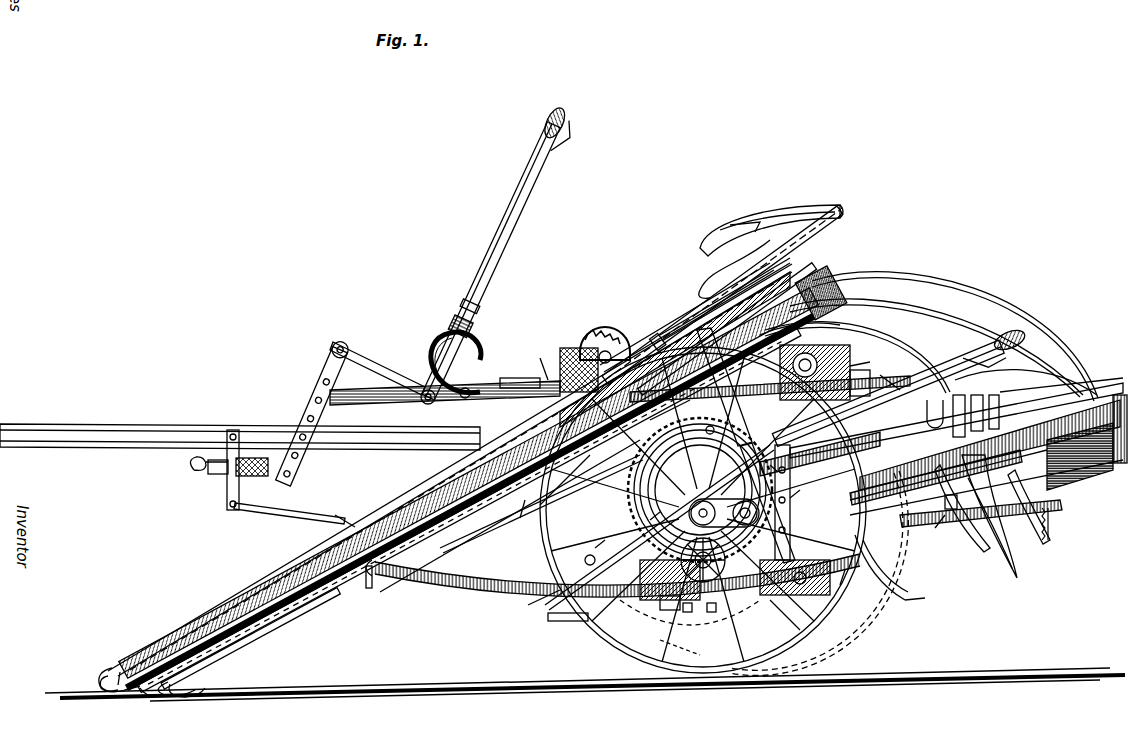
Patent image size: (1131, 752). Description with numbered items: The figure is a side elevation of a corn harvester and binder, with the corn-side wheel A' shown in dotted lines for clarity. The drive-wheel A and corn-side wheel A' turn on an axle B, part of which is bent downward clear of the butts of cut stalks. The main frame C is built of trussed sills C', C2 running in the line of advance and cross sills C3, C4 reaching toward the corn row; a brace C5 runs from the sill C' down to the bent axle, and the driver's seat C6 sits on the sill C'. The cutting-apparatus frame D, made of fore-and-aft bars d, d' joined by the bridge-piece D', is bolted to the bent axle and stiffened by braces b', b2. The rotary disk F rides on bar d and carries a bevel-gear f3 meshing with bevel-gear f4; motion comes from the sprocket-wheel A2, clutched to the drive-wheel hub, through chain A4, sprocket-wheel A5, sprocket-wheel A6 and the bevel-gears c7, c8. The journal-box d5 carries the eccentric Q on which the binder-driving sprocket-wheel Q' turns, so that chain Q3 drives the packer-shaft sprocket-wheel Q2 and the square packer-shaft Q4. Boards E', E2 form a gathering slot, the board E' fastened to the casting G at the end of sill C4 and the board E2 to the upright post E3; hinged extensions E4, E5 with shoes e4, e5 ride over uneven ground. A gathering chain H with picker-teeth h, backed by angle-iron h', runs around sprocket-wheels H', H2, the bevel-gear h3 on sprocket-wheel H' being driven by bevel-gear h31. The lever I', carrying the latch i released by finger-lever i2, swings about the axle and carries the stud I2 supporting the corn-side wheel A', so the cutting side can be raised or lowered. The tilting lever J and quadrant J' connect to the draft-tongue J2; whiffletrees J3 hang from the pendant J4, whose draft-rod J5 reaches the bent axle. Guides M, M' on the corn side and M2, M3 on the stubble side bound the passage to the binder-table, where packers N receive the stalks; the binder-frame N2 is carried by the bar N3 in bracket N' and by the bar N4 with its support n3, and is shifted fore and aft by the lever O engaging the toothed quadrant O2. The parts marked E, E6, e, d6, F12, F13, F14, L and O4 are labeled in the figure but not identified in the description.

The drive-wheel A is at (703, 510).
The corn-side wheel A' is at (821, 573).
The sprocket-wheel A2 is at (510, 516).
The chain A4 is at (670, 414).
The sprocket-wheel A5 is at (809, 349).
The sprocket-wheel A6 is at (770, 585).
The axle B is at (742, 600).
The brace b' is at (580, 553).
The brace b2 is at (801, 588).
The main frame C is at (653, 452).
The trussed sill C' is at (520, 371).
The trussed sill C2 is at (690, 525).
The front overreaching sill C3 is at (575, 352).
The rear overreaching sill C4 is at (815, 370).
The brace C5 is at (565, 483).
The driver's seat C6 is at (810, 228).
The bevel-gear c7 is at (716, 608).
The bevel-gear c8 is at (692, 608).
The cutting-apparatus frame D is at (670, 615).
The bridge-piece D' is at (667, 593).
The bar d is at (543, 607).
The bar d' is at (373, 585).
The journal-box d5 is at (848, 590).
The pin d6 is at (715, 420).
The main frame beam E is at (477, 476).
The board E' is at (541, 504).
The board E2 is at (350, 580).
The upright post E3 is at (820, 460).
The hinged extension E4 is at (165, 640).
The hinged extension E5 is at (262, 624).
The frame lug E6 is at (345, 523).
The pin e is at (797, 499).
The shoe e4 is at (104, 684).
The shoe e5 is at (190, 680).
The rotary disk F is at (659, 533).
The rod end F12 is at (566, 627).
The link F13 is at (785, 617).
The link F14 is at (680, 644).
The bevel-gear f3 is at (596, 544).
The bevel-gear f4 is at (652, 523).
The casting G is at (746, 445).
The gathering chain H is at (613, 571).
The sprocket-wheel H' is at (856, 356).
The sprocket-wheel H2 is at (230, 640).
The picker-teeth h is at (800, 321).
The angle-iron h' is at (525, 511).
The bevel-gear h3 is at (748, 290).
The bevel-gear h31 is at (856, 359).
The lever I' is at (956, 426).
The stud I2 is at (805, 560).
The latch i is at (774, 465).
The finger-lever i2 is at (1015, 350).
The tilting lever J is at (499, 254).
The quadrant J' is at (418, 409).
The draft-tongue J2 is at (270, 425).
The whiffletrees J3 is at (222, 470).
The pendant J4 is at (228, 492).
The draft-rod J5 is at (285, 512).
The axle hub L is at (724, 513).
The guide M is at (857, 357).
The guide M' is at (936, 348).
The guide M2 is at (1045, 378).
The guide M3 is at (1030, 318).
The packers N is at (878, 445).
The bracket N' is at (992, 514).
The binder-frame N2 is at (926, 412).
The bar N3 is at (890, 372).
The bar N4 is at (931, 534).
The support n3 is at (1060, 522).
The lever O is at (648, 320).
The toothed quadrant O2 is at (605, 330).
The rod O4 is at (712, 300).
The eccentric Q is at (989, 517).
The binder-driving sprocket-wheel Q' is at (885, 582).
The packer-shaft sprocket-wheel Q2 is at (880, 567).
The chain Q3 is at (920, 600).
The packer-shaft Q4 is at (950, 512).